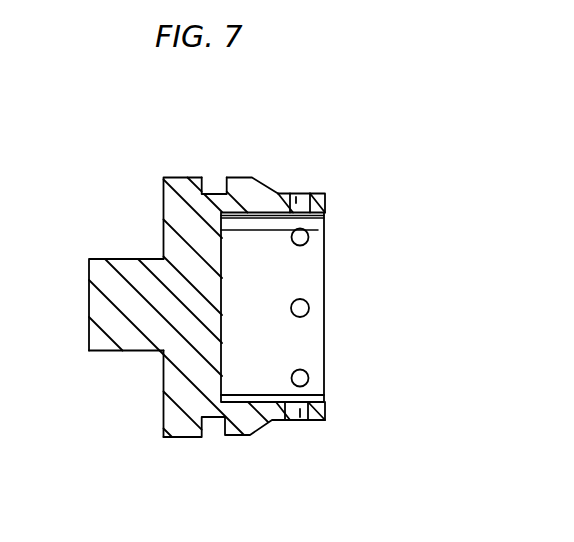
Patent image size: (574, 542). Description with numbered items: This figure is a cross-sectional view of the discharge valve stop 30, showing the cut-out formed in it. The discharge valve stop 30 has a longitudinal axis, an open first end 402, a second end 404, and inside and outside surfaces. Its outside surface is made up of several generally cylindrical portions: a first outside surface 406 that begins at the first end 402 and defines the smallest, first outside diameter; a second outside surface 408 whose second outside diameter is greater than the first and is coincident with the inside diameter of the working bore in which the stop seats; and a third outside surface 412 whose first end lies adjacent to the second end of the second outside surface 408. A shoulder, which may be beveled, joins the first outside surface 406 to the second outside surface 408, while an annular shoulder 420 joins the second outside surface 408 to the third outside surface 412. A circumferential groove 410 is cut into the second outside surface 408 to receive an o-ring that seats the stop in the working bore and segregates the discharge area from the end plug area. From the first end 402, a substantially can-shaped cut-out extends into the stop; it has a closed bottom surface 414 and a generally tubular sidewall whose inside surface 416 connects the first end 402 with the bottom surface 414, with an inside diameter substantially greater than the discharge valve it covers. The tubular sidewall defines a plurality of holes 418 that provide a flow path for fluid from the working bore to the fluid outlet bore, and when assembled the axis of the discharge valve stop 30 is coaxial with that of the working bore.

The discharge valve stop 30 is at (98, 190).
The open first end 402 is at (326, 204).
The second end 404 is at (88, 302).
The first outside surface 406 is at (314, 194).
The second outside surface 408 is at (240, 437).
The circumferential groove 410 is at (217, 182).
The third outside surface 412 is at (110, 352).
The bottom surface 414 is at (222, 347).
The inside surface 416 is at (250, 213).
The holes 418 is at (300, 420).
The annular shoulder 420 is at (163, 195).